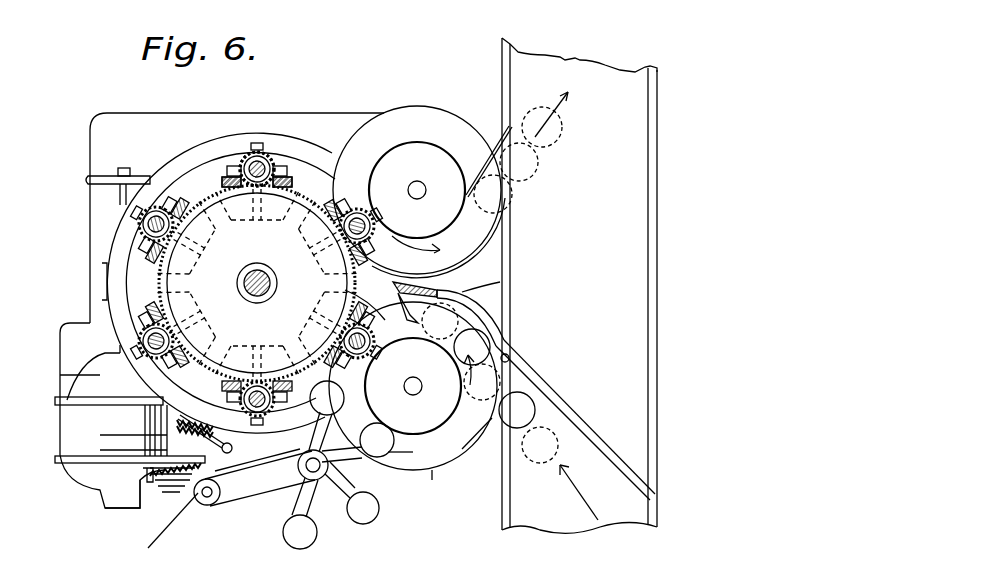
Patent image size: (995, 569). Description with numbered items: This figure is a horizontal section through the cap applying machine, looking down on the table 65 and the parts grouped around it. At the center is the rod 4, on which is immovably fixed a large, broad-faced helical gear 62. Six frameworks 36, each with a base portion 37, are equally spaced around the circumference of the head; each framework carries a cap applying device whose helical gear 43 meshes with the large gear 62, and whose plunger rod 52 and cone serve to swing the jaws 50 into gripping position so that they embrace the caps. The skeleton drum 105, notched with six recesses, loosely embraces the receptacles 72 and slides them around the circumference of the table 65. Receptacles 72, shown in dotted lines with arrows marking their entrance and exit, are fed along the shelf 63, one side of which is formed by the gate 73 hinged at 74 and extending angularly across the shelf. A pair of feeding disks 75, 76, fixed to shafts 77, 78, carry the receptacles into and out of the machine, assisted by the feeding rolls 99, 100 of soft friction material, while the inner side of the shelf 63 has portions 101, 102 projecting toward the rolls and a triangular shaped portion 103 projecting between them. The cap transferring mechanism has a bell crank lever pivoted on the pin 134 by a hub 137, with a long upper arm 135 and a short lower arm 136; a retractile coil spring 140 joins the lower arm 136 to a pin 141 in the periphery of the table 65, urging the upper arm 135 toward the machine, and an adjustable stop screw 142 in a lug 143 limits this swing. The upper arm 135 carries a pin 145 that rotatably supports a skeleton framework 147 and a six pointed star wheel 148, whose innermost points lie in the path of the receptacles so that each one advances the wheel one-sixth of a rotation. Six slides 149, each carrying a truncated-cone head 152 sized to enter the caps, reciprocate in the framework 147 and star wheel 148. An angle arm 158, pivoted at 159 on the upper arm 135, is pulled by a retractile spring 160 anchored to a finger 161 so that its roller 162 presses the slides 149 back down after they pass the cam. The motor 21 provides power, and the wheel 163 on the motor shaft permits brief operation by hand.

The rod 4 is at (260, 288).
The motor 21 is at (112, 415).
The framework 36 is at (172, 268).
The base portion 37 is at (198, 250).
The helical gear 43 is at (282, 177).
The jaw 50 is at (262, 160).
The plunger rod 52 is at (253, 160).
The helical gear 62 is at (162, 288).
The shelf 63 is at (579, 285).
The table 65 is at (202, 152).
The receptacles 72 is at (512, 182).
The gate 73 is at (572, 440).
The hinge 74 is at (508, 360).
The feeding disk 75 is at (438, 483).
The feeding disk 76 is at (420, 108).
The shaft 77 is at (416, 392).
The shaft 78 is at (418, 183).
The feeding rolls 99 is at (458, 456).
The feeding rolls 100 is at (409, 144).
The projecting portion 101 is at (488, 440).
The projecting portion 102 is at (498, 135).
The triangular shaped portion 103 is at (500, 284).
The skeleton drum 105 is at (190, 180).
The pin 134 is at (235, 503).
The upper arm 135 is at (244, 488).
The lower arm 136 is at (222, 432).
The hub 137 is at (200, 504).
The retractile coil spring 140 is at (197, 422).
The pin 141 is at (150, 424).
The adjustable stop screw 142 is at (165, 440).
The lug 143 is at (125, 444).
The pin 145 is at (330, 468).
The skeleton framework 147 is at (355, 522).
The star wheel 148 is at (375, 490).
The slide 149 is at (395, 453).
The head 152 is at (298, 545).
The angle arm 158 is at (270, 490).
The pivot 159 is at (173, 523).
The retractile spring 160 is at (128, 506).
The finger 161 is at (143, 478).
The roller 162 is at (315, 442).
The wheel 163 is at (88, 180).